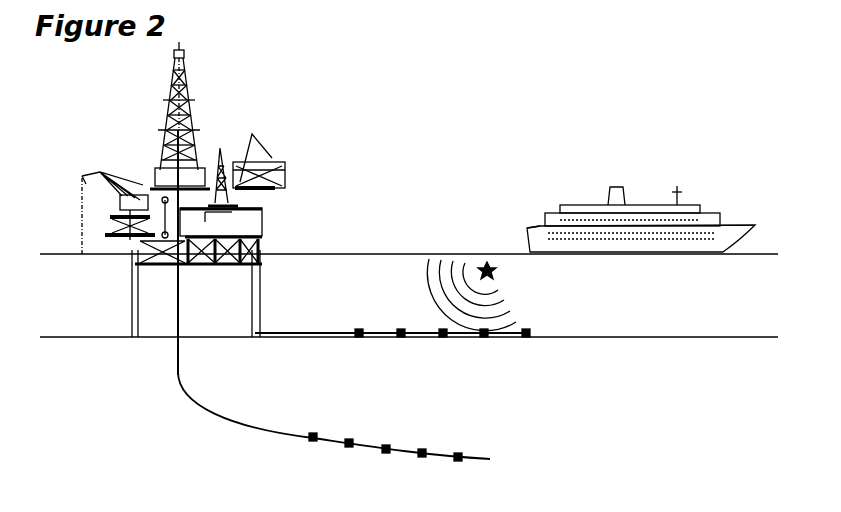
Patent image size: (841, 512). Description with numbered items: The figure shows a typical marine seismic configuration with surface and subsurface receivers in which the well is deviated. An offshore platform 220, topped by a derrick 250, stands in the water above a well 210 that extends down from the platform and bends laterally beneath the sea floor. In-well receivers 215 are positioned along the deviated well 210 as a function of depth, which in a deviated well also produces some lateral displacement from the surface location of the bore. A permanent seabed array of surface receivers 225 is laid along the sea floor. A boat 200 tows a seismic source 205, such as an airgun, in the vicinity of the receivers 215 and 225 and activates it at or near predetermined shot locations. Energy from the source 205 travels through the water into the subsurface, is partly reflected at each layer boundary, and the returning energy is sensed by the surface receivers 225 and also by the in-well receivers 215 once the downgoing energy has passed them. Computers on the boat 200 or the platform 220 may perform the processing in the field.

The boat 200 is at (706, 207).
The source 205 is at (481, 264).
The well 210 is at (187, 394).
The in-well receivers 215 is at (387, 446).
The platform 220 is at (302, 162).
The surface receivers 225 is at (527, 338).
The derrick 250 is at (192, 93).